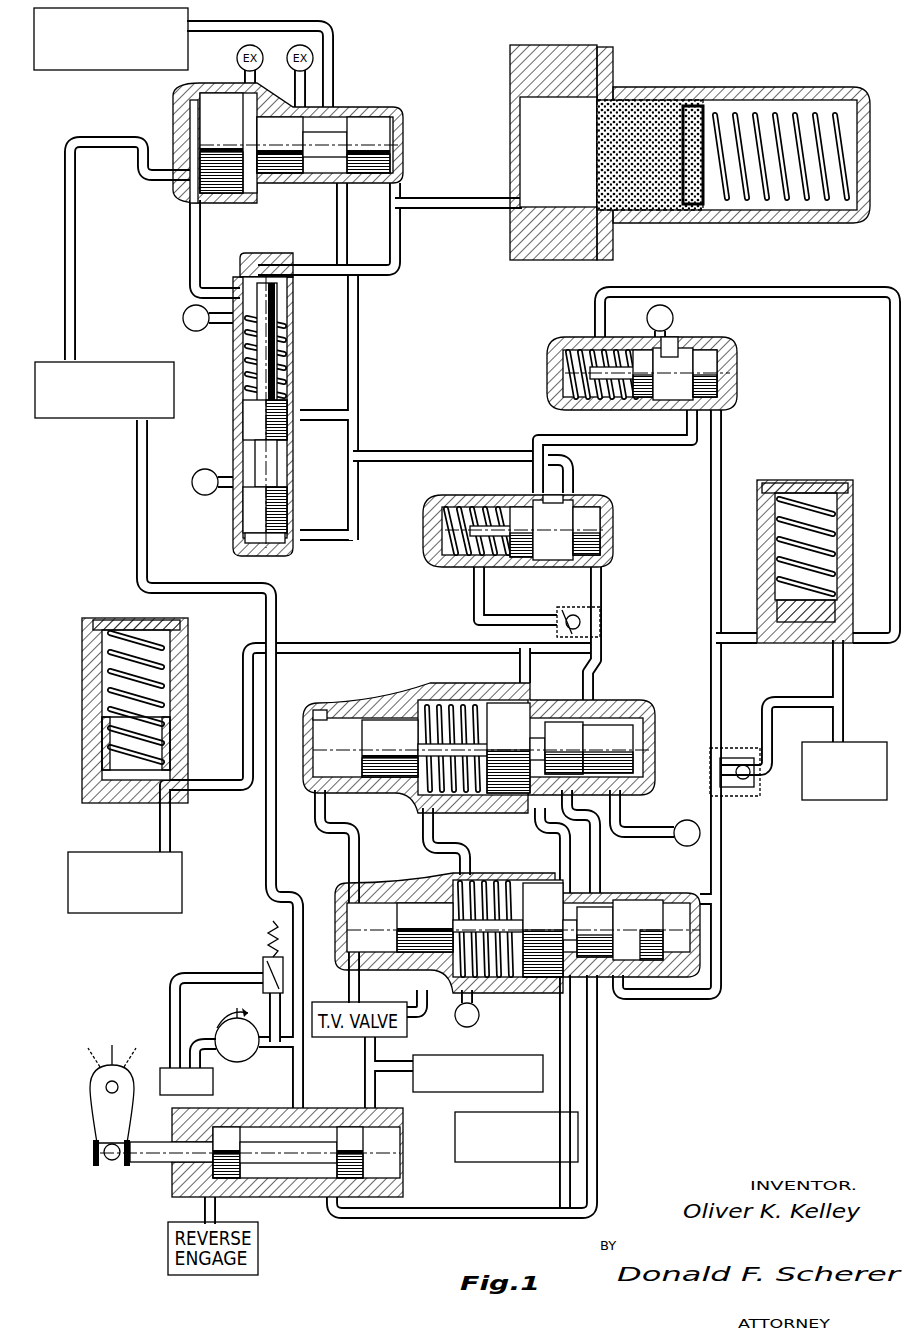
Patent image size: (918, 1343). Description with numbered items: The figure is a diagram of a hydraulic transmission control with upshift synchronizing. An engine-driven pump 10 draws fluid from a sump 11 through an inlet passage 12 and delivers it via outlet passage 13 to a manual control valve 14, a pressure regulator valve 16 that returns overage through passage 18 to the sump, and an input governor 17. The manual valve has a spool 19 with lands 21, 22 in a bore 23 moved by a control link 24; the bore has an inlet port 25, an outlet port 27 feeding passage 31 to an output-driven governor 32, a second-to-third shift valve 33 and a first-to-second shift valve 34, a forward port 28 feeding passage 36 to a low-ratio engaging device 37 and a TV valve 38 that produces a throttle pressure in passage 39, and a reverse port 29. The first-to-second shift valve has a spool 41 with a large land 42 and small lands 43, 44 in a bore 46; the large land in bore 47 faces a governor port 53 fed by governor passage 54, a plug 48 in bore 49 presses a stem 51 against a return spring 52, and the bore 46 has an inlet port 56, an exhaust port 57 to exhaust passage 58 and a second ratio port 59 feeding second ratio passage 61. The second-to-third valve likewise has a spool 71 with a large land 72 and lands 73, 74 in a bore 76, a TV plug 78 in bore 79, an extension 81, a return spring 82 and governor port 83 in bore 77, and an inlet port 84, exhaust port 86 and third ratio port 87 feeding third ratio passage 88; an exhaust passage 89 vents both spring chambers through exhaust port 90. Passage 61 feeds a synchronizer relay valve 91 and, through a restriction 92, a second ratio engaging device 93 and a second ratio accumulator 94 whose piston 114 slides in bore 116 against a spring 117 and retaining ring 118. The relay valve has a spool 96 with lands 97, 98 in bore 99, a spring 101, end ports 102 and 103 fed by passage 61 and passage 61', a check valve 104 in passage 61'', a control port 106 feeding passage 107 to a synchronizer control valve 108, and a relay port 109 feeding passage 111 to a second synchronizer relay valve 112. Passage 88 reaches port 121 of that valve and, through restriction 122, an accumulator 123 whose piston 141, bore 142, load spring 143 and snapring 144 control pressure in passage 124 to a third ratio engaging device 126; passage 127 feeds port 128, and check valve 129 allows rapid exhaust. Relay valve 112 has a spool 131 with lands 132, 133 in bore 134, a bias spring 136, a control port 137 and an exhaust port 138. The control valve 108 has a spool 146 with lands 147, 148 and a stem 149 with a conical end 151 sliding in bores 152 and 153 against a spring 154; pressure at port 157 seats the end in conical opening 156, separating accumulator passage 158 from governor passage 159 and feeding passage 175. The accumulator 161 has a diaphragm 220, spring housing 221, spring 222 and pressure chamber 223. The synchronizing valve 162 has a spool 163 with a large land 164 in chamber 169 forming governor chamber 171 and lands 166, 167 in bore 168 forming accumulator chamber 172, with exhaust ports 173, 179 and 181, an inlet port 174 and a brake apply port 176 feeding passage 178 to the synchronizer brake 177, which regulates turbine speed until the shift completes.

The engine-driven pump 10 is at (220, 1023).
The sump 11 is at (214, 1087).
The inlet passage 12 is at (205, 1028).
The outlet passage 13 is at (304, 1070).
The manual control valve 14 is at (240, 1129).
The pressure regulator valve 16 is at (267, 977).
The input governor 17 is at (70, 418).
The passage 18 is at (173, 979).
The valve spool 19 is at (268, 1164).
The land 21 is at (233, 1137).
The land 22 is at (360, 1143).
The bore 23 is at (395, 1131).
The control link 24 is at (97, 1113).
The inlet port 25 is at (300, 1116).
The outlet port 27 is at (330, 1200).
The forward port 28 is at (369, 1120).
The reverse port 29 is at (203, 1189).
The passage 31 is at (432, 1220).
The output-driven governor 32 is at (493, 1160).
The 2-3 shift valve 33 is at (700, 953).
The 1-2 shift valve 34 is at (640, 768).
The passage 36 is at (376, 1053).
The low-ratio engaging device 37 is at (490, 1062).
The TV valve 38 is at (412, 1016).
The passage 39 is at (348, 858).
The valve spool 41 is at (501, 753).
The large diameter land 42 is at (500, 797).
The small diameter land 43 is at (553, 734).
The small diameter land 44 is at (640, 752).
The bore 46 is at (637, 742).
The bore 47 is at (448, 703).
The plug 48 is at (381, 730).
The bore 49 is at (340, 720).
The stem 51 is at (430, 750).
The return spring 52 is at (470, 707).
The governor port 53 is at (512, 798).
The governor passage 54 is at (536, 845).
The inlet port 56 is at (566, 794).
The exhaust port 57 is at (621, 792).
The exhaust passage 58 is at (680, 808).
The second ratio control port 59 is at (585, 742).
The second ratio passage 61 is at (556, 633).
The second ratio passage 61' is at (381, 709).
The passage 61'' is at (518, 607).
The valve spool 71 is at (542, 954).
The large diameter land 72 is at (533, 974).
The small diameter land 73 is at (602, 878).
The small diameter land 74 is at (663, 923).
The bore 76 is at (651, 901).
The bore 77 is at (460, 874).
The TV plug 78 is at (447, 957).
The bore 79 is at (400, 903).
The small diameter extension 81 is at (505, 930).
The return spring 82 is at (474, 994).
The governor port 83 is at (537, 950).
The inlet port 84 is at (604, 978).
The exhaust port 86 is at (598, 917).
The third ratio port 87 is at (623, 967).
The third ratio passage 88 is at (712, 490).
The exhaust passage 89 is at (422, 829).
The exhaust port 90 is at (457, 1027).
The synchronizer relay valve 91 is at (521, 534).
The restriction 92 is at (527, 656).
The second ratio engaging device 93 is at (180, 888).
The second ratio accumulator 94 is at (132, 694).
The valve spool 96 is at (578, 509).
The land 97 is at (535, 558).
The land 98 is at (565, 530).
The valve bore 99 is at (480, 507).
The spring 101 is at (437, 507).
The port 102 is at (598, 566).
The port 103 is at (482, 566).
The ball check valve 104 is at (570, 610).
The synchronizer control port 106 is at (571, 487).
The passage 107 is at (422, 456).
The synchronizer control valve 108 is at (252, 421).
The synchronizer relay port 109 is at (540, 506).
The passage 111 is at (541, 422).
The synchronizer relay valve 112 is at (636, 371).
The piston 114 is at (100, 777).
The bore 116 is at (175, 688).
The spring 117 is at (110, 655).
The retaining ring 118 is at (157, 625).
The port 121 is at (723, 413).
The restriction 122 is at (730, 645).
The accumulator 123 is at (806, 547).
The passage 124 is at (845, 690).
The third ratio engaging device 126 is at (824, 800).
The passage 127 is at (889, 357).
The port 128 is at (596, 337).
The one-way check valve 129 is at (738, 789).
The valve spool 131 is at (691, 356).
The land 132 is at (647, 394).
The land 133 is at (716, 363).
The valve bore 134 is at (674, 355).
The bias spring 136 is at (563, 367).
The synchronizer relay control port 137 is at (692, 446).
The exhaust port 138 is at (650, 340).
The piston 141 is at (840, 604).
The bore 142 is at (834, 534).
The load spring 143 is at (778, 533).
The snapring 144 is at (793, 473).
The valve spool 146 is at (263, 468).
The land 147 is at (247, 518).
The land 148 is at (246, 418).
The stem member 149 is at (256, 367).
The conical end 151 is at (253, 283).
The bore 152 is at (273, 510).
The bore 153 is at (280, 304).
The spring 154 is at (243, 334).
The conical-shaped opening 156 is at (275, 262).
The port 157 is at (295, 541).
The accumulator passage 158 is at (391, 268).
The governor passage 159 is at (190, 222).
The accumulator 161 is at (669, 152).
The synchronizing valve 162 is at (292, 140).
The valve spool 163 is at (317, 158).
The large diameter land 164 is at (200, 178).
The land 166 is at (268, 174).
The land 167 is at (370, 127).
The valve bore 168 is at (322, 158).
The chamber 169 is at (225, 92).
The governor pressure chamber 171 is at (176, 108).
The governor accumulator chamber 172 is at (400, 160).
The exhaust port 173 is at (262, 24).
The inlet port 174 is at (344, 184).
The passage 175 is at (359, 300).
The brake apply port 176 is at (337, 106).
The synchronizer brake 177 is at (64, 64).
The brake apply passage 178 is at (331, 36).
The exhaust port 179 is at (305, 104).
The exhaust port 181 is at (209, 496).
The flexible diaphragm 220 is at (660, 100).
The spring housing 221 is at (790, 97).
The spring 222 is at (803, 200).
The pressure chamber 223 is at (537, 117).